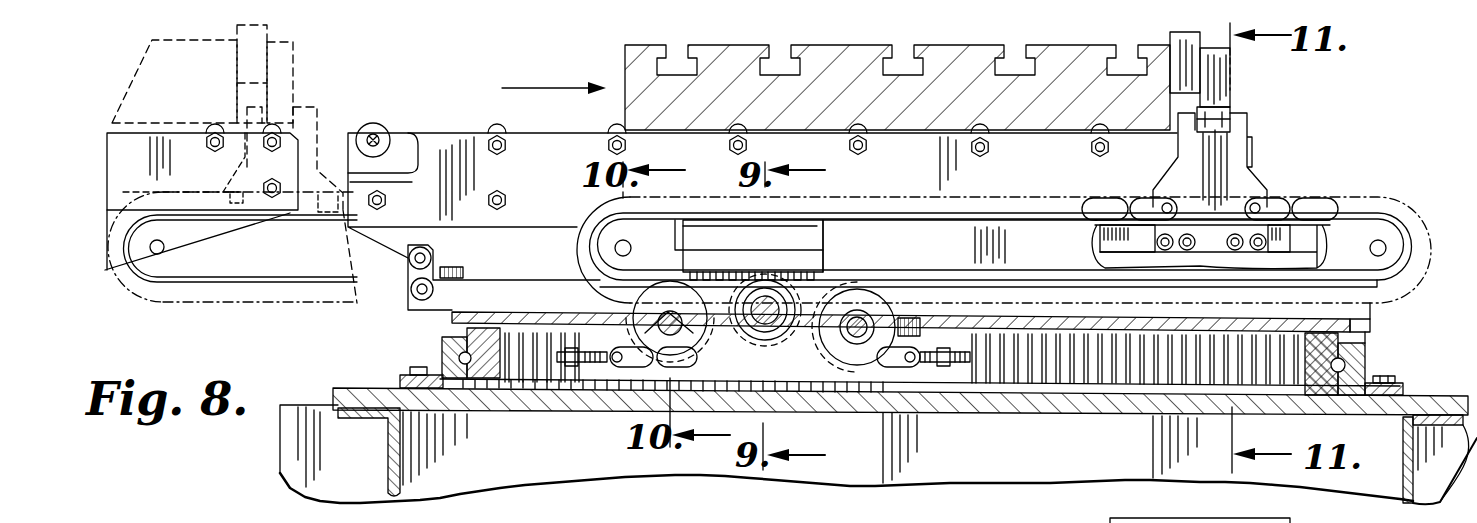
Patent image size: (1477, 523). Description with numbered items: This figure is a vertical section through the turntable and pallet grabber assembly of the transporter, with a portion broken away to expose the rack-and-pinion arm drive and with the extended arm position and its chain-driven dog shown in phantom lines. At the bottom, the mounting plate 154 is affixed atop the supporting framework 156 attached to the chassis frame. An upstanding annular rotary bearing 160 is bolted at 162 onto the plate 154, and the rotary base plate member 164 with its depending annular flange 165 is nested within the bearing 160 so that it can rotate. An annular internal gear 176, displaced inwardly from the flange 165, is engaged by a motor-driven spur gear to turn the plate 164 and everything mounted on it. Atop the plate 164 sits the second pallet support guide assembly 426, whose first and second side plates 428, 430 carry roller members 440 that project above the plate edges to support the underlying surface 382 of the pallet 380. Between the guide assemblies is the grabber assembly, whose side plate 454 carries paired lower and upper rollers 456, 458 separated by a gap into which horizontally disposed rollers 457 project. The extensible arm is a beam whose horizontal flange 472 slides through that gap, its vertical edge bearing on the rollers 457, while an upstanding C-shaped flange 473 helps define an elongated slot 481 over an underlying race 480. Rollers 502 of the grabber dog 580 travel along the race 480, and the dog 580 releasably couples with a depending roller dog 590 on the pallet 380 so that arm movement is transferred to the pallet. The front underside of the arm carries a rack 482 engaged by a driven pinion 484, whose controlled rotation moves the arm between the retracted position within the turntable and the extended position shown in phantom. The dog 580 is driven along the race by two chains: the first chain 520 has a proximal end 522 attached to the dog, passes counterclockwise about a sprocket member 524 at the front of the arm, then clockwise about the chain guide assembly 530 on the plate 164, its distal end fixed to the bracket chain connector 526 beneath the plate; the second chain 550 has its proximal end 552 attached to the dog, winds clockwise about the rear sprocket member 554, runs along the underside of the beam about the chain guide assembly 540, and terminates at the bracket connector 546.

The mounting plate 154 is at (1462, 394).
The supporting framework 156 is at (370, 415).
The rotary bearing 160 is at (1367, 348).
The bolts 162 is at (1386, 375).
The rotary base plate member 164 is at (1352, 330).
The depending annular flange 165 is at (452, 332).
The annular internal gear 176 is at (1075, 377).
The pallet 380 is at (212, 71).
The underlying surface 382 is at (165, 130).
The second pallet support guide assembly 426 is at (514, 124).
The first side plate 428 is at (566, 171).
The second side plate 430 is at (410, 137).
The roller members 440 is at (378, 124).
The second side plate 454 is at (482, 280).
The lower rollers 456 is at (410, 290).
The horizontally disposed rollers 457 is at (450, 268).
The upper rollers 458 is at (408, 260).
The first horizontally-extending flange 472 is at (1092, 268).
The C-shaped flange 473 is at (959, 237).
The race 480 is at (784, 241).
The elongated slot 481 is at (1280, 236).
The rack 482 is at (717, 274).
The driven pinion 484 is at (768, 342).
The rollers 502 is at (1228, 228).
The drive chain 520 is at (270, 296).
The proximal end 522 is at (233, 202).
The sprocket member 524 is at (628, 357).
The bracket chain connector 526 is at (587, 313).
The chain guide assembly 530 is at (704, 362).
The chain guide assembly 540 is at (833, 286).
The bracket connector 546 is at (932, 322).
The second chain 550 is at (322, 218).
The proximal end 552 is at (1268, 203).
The sprocket member 554 is at (1377, 205).
The grabber dog 580 is at (318, 113).
The roller dog 590 is at (300, 107).